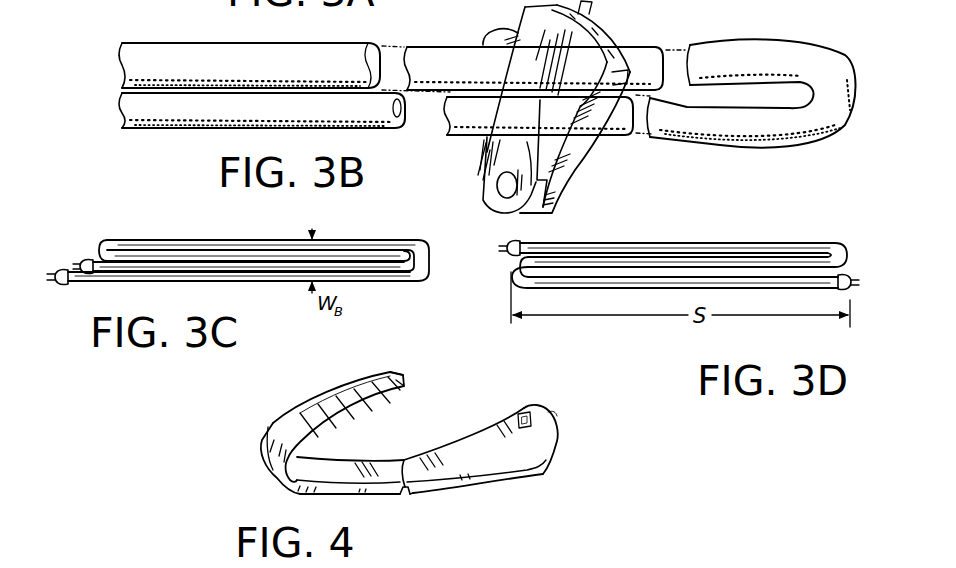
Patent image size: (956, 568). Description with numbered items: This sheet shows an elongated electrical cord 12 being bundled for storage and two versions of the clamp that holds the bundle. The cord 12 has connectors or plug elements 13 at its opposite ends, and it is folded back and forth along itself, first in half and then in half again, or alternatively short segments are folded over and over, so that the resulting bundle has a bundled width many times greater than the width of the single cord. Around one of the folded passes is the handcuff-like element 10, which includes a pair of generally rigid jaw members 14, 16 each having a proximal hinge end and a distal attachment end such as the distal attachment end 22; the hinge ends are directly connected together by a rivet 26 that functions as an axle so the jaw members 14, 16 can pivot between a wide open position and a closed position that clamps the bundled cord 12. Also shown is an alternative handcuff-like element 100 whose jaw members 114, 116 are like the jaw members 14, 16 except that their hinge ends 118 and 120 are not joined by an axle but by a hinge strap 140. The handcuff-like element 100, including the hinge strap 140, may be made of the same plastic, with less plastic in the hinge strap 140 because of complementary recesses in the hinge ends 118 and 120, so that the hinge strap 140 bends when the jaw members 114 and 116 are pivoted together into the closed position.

In FIG. 3B, the handcuff-like element 10 is at (549, 107).
In FIG. 3B, the electrical cord 12 is at (664, 41).
In FIG. 3C, the electrical cord 12 is at (388, 239).
In FIG. 3D, the electrical cord 12 is at (738, 242).
In FIG. 3C, the plug elements 13 is at (88, 258).
In FIG. 3D, the plug elements 13 is at (519, 243).
In FIG. 3B, the jaw member 14 is at (489, 34).
In FIG. 3B, the jaw member 16 is at (588, 59).
In FIG. 3B, the distal attachment end 22 is at (592, 134).
In FIG. 3B, the rivet 26 is at (507, 185).
In FIG. 4, the handcuff-like element 100 is at (369, 456).
In FIG. 4, the jaw member 114 is at (341, 466).
In FIG. 4, the jaw member 116 is at (458, 455).
In FIG. 4, the hinge end 118 is at (391, 494).
In FIG. 4, the hinge end 120 is at (420, 491).
In FIG. 4, the hinge strap 140 is at (406, 459).